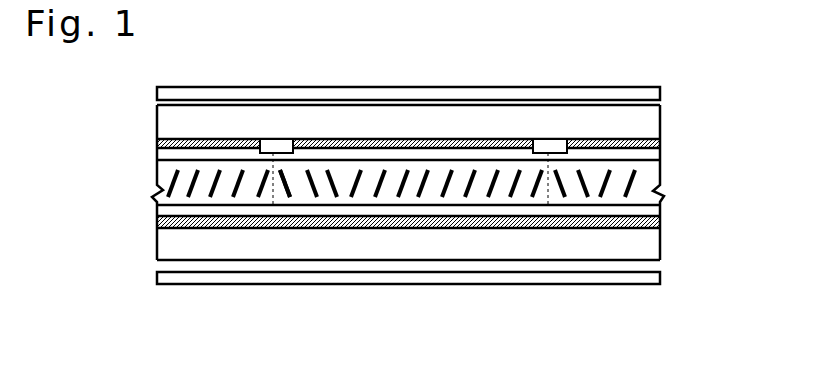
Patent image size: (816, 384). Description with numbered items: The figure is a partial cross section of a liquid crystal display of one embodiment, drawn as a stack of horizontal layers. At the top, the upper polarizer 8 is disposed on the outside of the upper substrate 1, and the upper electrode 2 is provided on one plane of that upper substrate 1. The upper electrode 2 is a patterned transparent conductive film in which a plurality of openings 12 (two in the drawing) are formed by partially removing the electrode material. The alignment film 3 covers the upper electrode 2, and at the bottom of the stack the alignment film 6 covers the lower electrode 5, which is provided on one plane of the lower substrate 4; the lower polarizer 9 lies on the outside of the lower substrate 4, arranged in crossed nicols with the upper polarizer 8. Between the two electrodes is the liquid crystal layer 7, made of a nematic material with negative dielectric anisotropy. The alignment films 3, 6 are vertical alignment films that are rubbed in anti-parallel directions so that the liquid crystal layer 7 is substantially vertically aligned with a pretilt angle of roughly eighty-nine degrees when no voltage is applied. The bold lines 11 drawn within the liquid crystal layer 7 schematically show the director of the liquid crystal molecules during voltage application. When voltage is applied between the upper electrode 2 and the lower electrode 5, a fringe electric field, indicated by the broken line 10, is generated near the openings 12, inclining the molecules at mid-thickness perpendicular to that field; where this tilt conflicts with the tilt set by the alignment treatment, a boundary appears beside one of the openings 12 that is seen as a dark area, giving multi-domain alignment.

The upper substrate 1 is at (660, 108).
The upper electrode 2 is at (660, 143).
The alignment film 3 is at (660, 153).
The lower substrate 4 is at (660, 247).
The lower electrode 5 is at (660, 225).
The alignment film 6 is at (660, 215).
The liquid crystal layer 7 is at (660, 170).
The upper polarizer 8 is at (637, 87).
The lower polarizer 9 is at (635, 285).
The broken line 10 is at (283, 198).
The bold lines 11 is at (383, 190).
The openings 12 is at (276, 139).